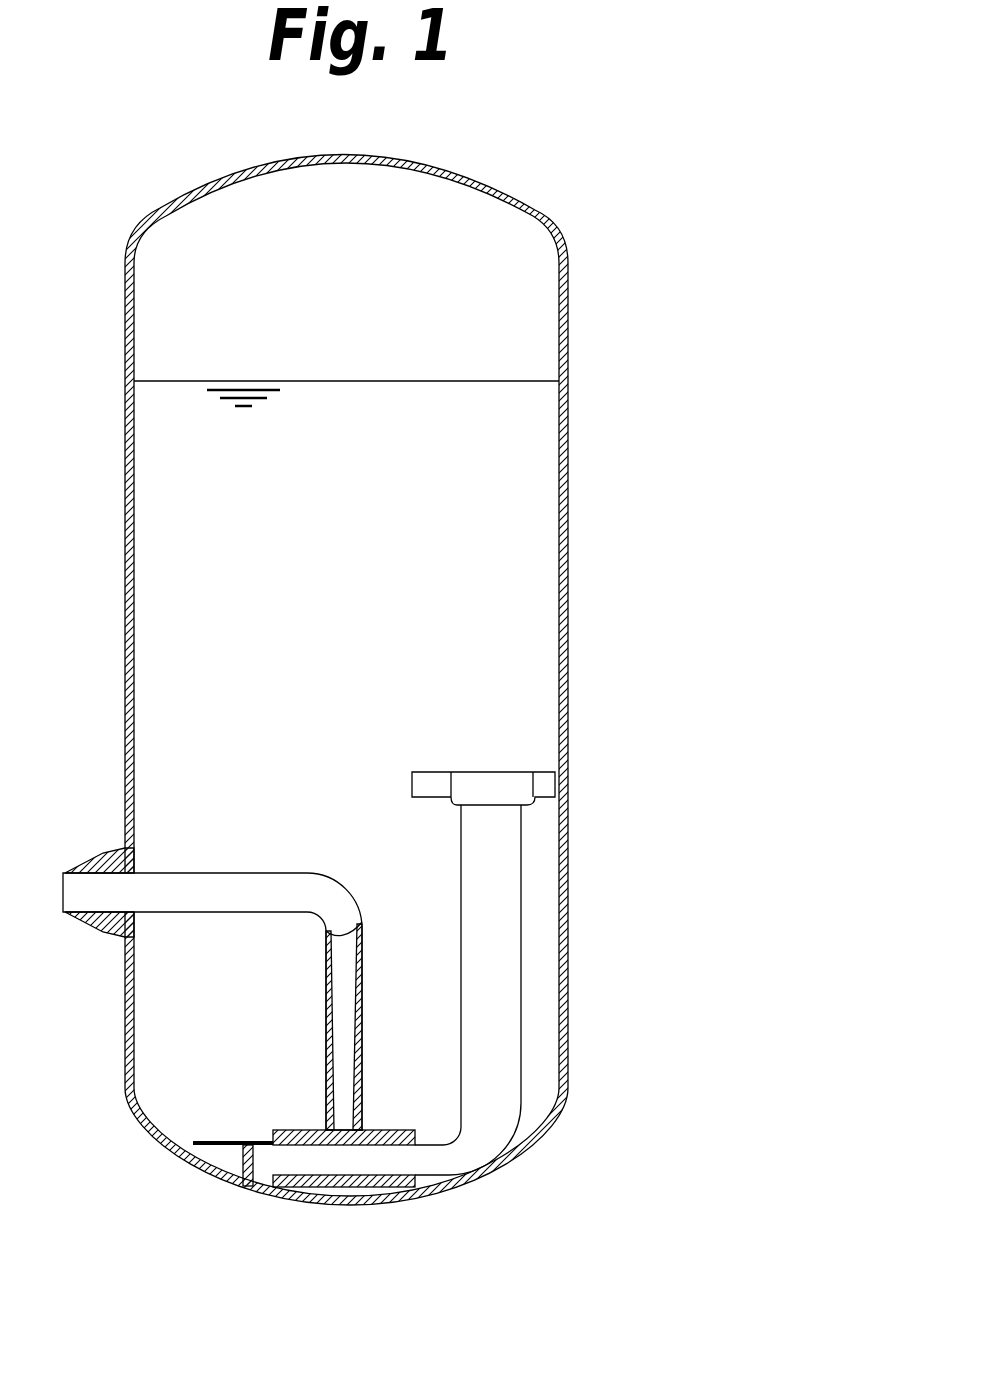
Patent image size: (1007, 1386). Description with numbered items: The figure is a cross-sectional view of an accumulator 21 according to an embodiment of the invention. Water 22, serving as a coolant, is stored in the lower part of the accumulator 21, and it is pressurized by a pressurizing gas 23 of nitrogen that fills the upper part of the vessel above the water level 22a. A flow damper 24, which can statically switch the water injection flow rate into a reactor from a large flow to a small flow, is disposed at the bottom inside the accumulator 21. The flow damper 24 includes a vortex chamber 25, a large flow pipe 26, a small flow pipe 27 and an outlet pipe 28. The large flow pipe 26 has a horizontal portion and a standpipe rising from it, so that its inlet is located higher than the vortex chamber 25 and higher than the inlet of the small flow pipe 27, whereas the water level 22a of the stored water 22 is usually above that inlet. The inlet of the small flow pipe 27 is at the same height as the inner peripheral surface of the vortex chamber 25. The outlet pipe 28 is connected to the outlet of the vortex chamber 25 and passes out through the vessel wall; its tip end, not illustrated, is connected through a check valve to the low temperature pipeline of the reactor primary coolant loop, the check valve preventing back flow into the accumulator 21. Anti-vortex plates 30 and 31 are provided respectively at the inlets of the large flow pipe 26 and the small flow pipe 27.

The accumulator 21 is at (522, 198).
The water 22 is at (513, 490).
The water level 22a is at (500, 378).
The pressurizing gas 23 is at (507, 283).
The flow damper 24 is at (515, 733).
The vortex chamber 25 is at (293, 1130).
The large flow pipe 26 is at (523, 1060).
The small flow pipe 27 is at (258, 1197).
The outlet pipe 28 is at (187, 872).
The anti-vortex plate 30 is at (543, 771).
The anti-vortex plate 31 is at (220, 1140).